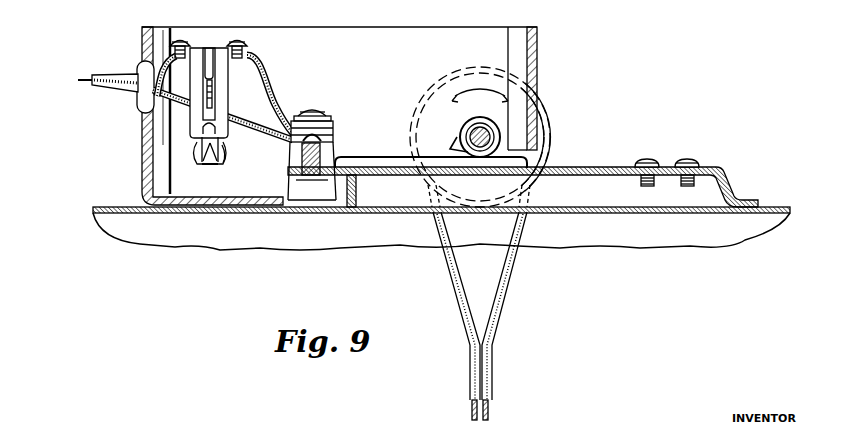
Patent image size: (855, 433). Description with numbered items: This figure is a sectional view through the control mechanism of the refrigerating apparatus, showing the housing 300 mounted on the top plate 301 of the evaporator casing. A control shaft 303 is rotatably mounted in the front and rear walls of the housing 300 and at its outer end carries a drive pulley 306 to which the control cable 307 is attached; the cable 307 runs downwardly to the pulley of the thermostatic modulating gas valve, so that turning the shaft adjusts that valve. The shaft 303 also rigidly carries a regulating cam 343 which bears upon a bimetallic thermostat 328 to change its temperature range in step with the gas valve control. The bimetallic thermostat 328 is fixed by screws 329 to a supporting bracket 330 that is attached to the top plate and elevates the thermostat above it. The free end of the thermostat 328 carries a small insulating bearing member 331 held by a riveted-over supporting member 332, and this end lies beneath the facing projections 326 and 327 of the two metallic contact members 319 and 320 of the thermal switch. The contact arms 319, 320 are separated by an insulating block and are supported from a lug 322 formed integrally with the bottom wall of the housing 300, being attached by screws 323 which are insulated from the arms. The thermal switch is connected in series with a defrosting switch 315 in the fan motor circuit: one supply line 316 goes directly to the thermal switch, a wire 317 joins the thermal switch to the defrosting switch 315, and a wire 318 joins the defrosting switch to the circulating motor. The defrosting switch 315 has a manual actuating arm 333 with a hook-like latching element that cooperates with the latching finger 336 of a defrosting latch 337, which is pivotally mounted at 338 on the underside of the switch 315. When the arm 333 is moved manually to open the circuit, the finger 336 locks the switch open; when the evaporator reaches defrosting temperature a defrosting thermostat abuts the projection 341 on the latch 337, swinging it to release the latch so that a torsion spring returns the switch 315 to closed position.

The housing 300 is at (537, 53).
The top plate 301 is at (607, 214).
The control shaft 303 is at (470, 126).
The drive pulley 306 is at (545, 120).
The control cable 307 is at (490, 338).
The defrosting switch 315 is at (225, 113).
The supply line 316 is at (150, 112).
The wire 317 is at (258, 72).
The wire 318 is at (170, 63).
The contact member 319 is at (300, 143).
The contact member 320 is at (329, 137).
The lug 322 is at (316, 188).
The screws 323 is at (315, 110).
The facing projection 326 is at (328, 134).
The facing projection 327 is at (313, 113).
The bimetallic thermostat 328 is at (563, 167).
The screws 329 is at (681, 162).
The supporting bracket 330 is at (731, 182).
The bearing member 331 is at (320, 152).
The supporting member 332 is at (313, 173).
The manual actuating arm 333 is at (209, 50).
The latching finger 336 is at (203, 128).
The defrosting latch 337 is at (223, 150).
The pivot 338 is at (192, 153).
The projection 341 is at (204, 166).
The regulating cam 343 is at (455, 140).